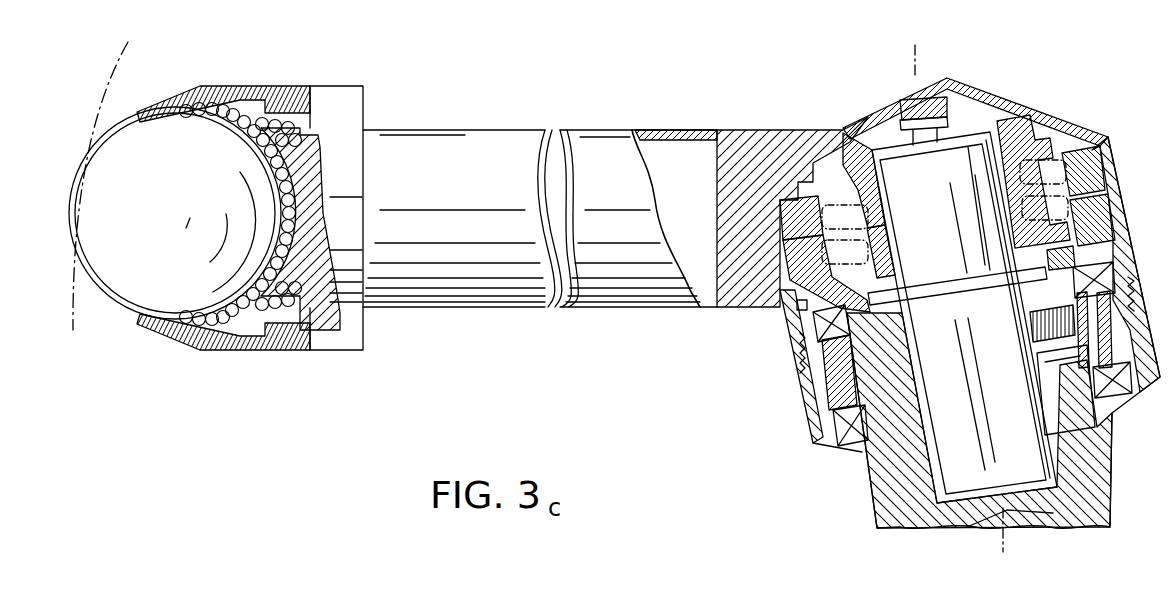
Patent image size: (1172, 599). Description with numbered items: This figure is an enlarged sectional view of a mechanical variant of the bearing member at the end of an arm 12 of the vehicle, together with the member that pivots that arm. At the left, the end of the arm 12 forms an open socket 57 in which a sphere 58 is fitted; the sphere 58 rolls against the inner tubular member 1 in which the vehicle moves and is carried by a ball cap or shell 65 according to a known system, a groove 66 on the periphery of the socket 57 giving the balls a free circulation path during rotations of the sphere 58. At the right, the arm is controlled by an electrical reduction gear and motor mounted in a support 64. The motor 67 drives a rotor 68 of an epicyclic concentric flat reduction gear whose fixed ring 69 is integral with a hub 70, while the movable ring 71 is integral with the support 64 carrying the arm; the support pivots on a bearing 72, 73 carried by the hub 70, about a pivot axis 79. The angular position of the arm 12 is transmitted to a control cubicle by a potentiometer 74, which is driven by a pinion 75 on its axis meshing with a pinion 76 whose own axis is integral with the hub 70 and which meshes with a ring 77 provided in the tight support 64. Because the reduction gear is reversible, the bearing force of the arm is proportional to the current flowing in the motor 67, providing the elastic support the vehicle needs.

The inner tubular member 1 is at (66, 290).
The arm 12 is at (452, 142).
The socket 57 is at (235, 96).
The sphere 58 is at (176, 204).
The support 64 is at (1090, 137).
The ball cap or shell 65 is at (213, 352).
The groove 66 is at (300, 134).
The motor 67 is at (933, 224).
The rotor 68 is at (1007, 118).
The fixed ring 69 is at (752, 300).
The hub 70 is at (893, 462).
The movable ring 71 is at (785, 212).
The bearing 72 is at (812, 441).
The bearing 73 is at (815, 330).
The potentiometer 74 is at (1085, 424).
The pinion 75 is at (1060, 322).
The pinion 76 is at (1138, 310).
The ring 77 is at (800, 398).
The pivot axis 79 is at (913, 70).